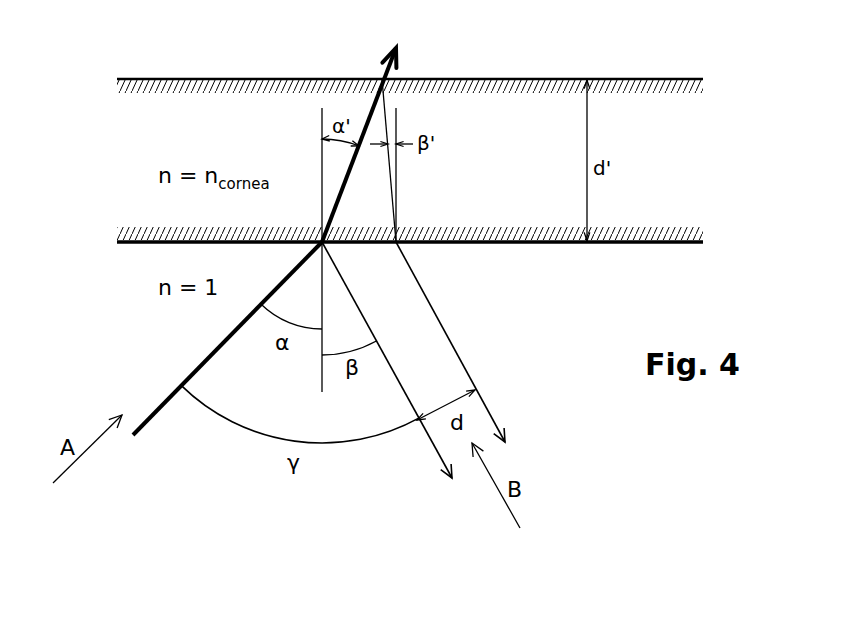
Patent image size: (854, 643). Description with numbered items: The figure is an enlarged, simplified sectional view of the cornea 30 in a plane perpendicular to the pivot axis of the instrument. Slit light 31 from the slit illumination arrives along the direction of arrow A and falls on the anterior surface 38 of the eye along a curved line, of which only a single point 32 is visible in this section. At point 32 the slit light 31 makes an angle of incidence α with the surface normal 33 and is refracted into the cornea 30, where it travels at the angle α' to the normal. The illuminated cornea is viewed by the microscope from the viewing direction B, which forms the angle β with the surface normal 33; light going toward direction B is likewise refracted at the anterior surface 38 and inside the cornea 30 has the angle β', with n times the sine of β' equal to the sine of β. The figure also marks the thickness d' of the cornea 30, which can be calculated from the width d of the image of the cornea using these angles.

The cornea 30 is at (681, 169).
The slit light 31 is at (217, 338).
The point 32 is at (283, 125).
The surface normal 33 is at (288, 254).
The anterior surface 38 is at (410, 291).